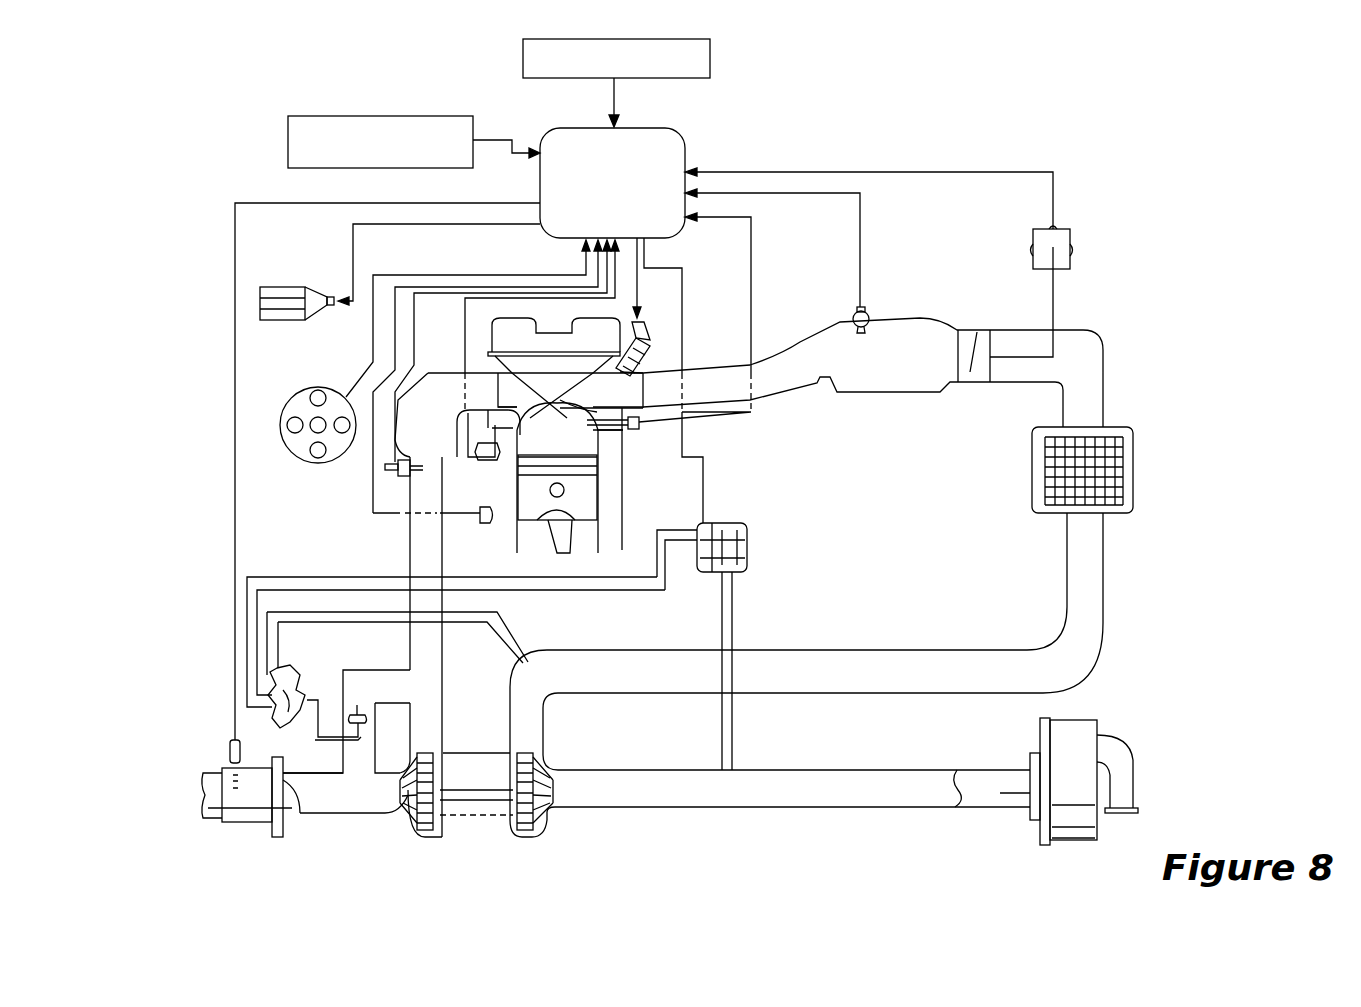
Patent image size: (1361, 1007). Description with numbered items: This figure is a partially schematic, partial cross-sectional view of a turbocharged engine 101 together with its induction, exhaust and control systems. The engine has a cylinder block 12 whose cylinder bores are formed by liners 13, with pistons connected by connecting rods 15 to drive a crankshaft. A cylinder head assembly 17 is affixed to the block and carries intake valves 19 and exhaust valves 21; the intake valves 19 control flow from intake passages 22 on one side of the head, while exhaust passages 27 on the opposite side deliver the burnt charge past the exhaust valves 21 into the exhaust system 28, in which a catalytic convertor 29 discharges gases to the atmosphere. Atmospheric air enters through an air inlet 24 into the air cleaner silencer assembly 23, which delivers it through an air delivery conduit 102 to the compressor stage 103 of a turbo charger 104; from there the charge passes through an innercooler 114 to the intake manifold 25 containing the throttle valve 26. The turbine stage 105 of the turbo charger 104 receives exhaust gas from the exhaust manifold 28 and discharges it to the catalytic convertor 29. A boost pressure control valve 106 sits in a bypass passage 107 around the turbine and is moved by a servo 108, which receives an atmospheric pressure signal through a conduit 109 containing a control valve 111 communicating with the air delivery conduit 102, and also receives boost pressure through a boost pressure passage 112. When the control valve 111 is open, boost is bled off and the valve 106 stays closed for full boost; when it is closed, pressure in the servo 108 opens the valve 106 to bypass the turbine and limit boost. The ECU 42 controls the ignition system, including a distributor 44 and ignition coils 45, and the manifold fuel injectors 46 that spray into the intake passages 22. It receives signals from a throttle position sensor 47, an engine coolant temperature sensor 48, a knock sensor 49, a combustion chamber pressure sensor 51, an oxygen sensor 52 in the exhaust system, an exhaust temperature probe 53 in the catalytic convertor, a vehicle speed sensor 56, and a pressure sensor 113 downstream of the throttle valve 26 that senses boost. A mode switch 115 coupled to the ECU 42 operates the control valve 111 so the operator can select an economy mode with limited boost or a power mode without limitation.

The cylinder block 12 is at (625, 512).
The cylinder bore liners 13 is at (510, 550).
The connecting rods 15 is at (567, 553).
The cylinder head assembly 17 is at (520, 362).
The intake valves 19 is at (573, 423).
The exhaust valves 21 is at (500, 445).
The intake passages 22 is at (640, 372).
The air cleaner silencer assembly 23 is at (1077, 730).
The air inlet 24 is at (1135, 782).
The intake manifold 25 is at (868, 395).
The throttle valve 26 is at (975, 380).
The exhaust passages 27 is at (508, 390).
The exhaust system 28 is at (446, 657).
The catalytic convertor 29 is at (252, 834).
The ECU 42 is at (687, 152).
The distributor 44 is at (290, 393).
The ignition coils 45 is at (283, 266).
The manifold fuel injectors 46 is at (652, 333).
The throttle position sensor 47 is at (1072, 235).
The engine coolant temperature sensor 48 is at (478, 462).
The knock sensor 49 is at (487, 524).
The combustion chamber pressure sensor 51 is at (638, 430).
The oxygen sensor 52 is at (396, 472).
The exhaust temperature probe 53 is at (228, 748).
The vehicle speed sensor 56 is at (418, 113).
The engine 101 is at (524, 308).
The air delivery conduit 102 is at (727, 812).
The compressor stage 103 is at (553, 825).
The turbo charger 104 is at (476, 842).
The turbine stage 105 is at (405, 825).
The boost pressure control valve 106 is at (358, 712).
The bypass passage 107 is at (342, 640).
The servo 108 is at (300, 665).
The conduit 109 is at (735, 621).
The control valve 111 is at (745, 526).
The boost pressure passage 112 is at (518, 640).
The pressure sensor 113 is at (871, 313).
The innercooler 114 is at (1133, 478).
The mode switch 115 is at (710, 58).